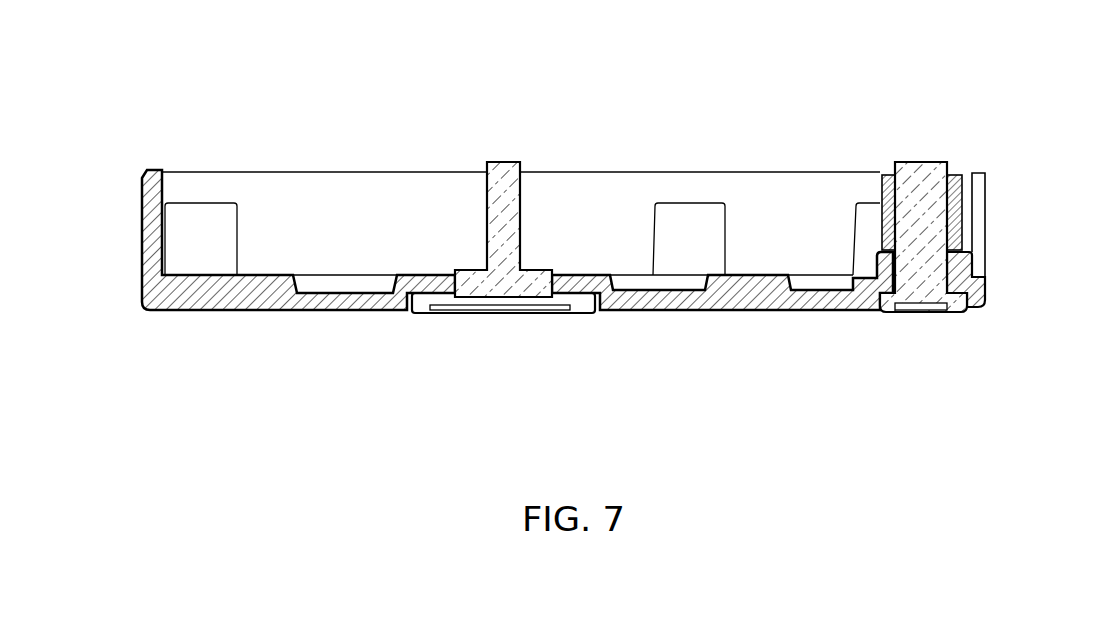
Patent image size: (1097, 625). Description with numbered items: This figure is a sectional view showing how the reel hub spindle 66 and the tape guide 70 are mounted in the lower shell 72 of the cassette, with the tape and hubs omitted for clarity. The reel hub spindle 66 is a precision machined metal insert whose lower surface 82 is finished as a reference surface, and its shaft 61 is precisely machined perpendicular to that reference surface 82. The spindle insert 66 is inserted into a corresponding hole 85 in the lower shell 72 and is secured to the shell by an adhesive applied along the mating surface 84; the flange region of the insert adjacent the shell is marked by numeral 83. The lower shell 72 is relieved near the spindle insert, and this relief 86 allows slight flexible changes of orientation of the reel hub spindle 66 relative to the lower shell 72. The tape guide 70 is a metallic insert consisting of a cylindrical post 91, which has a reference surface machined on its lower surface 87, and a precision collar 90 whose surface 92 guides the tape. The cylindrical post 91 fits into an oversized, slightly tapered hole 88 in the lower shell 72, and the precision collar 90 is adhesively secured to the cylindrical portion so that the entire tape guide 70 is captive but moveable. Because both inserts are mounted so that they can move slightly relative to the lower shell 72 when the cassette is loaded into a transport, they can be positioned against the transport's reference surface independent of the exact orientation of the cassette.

The lower shell 72 is at (226, 292).
The relief 86 is at (333, 285).
The shaft 61 is at (494, 171).
The reel hub spindle 66 is at (497, 218).
The post flange 83 is at (549, 268).
The hole 85 is at (553, 283).
The mating surface 84 is at (509, 338).
The lower surface 82 is at (513, 313).
The tape guide 70 is at (923, 214).
The precision collar 90 is at (883, 183).
The cylindrical post 91 is at (952, 172).
The surface 92 is at (968, 188).
The lower surface 87 is at (915, 312).
The hole 88 is at (973, 310).